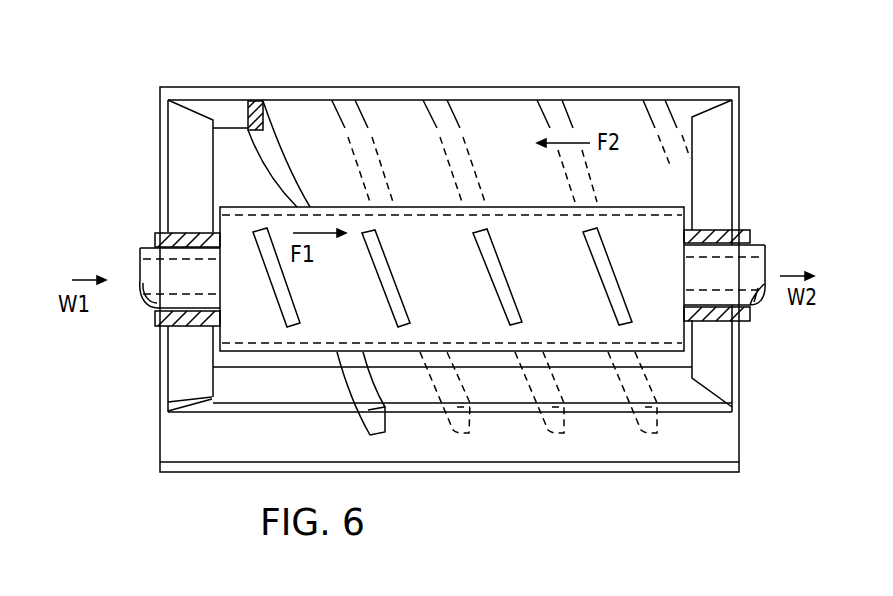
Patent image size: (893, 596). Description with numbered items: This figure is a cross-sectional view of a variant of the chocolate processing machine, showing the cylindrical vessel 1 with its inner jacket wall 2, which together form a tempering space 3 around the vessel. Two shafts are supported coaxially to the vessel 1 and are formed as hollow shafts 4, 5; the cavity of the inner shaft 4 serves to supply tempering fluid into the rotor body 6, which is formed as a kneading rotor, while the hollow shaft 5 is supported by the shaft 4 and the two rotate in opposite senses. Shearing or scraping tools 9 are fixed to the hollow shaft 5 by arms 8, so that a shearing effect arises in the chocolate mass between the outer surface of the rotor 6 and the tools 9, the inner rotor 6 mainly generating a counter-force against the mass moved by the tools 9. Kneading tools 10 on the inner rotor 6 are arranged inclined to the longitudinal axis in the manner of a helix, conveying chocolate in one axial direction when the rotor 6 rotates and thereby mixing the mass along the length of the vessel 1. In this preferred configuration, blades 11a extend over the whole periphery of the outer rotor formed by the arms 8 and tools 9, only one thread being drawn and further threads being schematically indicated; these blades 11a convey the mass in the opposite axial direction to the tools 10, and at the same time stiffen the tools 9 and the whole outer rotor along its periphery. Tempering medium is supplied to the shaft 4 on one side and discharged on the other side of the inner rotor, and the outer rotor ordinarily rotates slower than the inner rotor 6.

The cylindrical vessel 1 is at (521, 86).
The inner jacket wall 2 is at (500, 452).
The tempering space 3 is at (443, 103).
The hollow shaft 4 is at (150, 273).
The hollow shaft 5 is at (180, 232).
The rotor body 6 is at (668, 232).
The arms 8 is at (187, 155).
The shearing or scraping tools 9 is at (615, 107).
The kneading tools 10 is at (377, 275).
The blades 11a is at (273, 123).